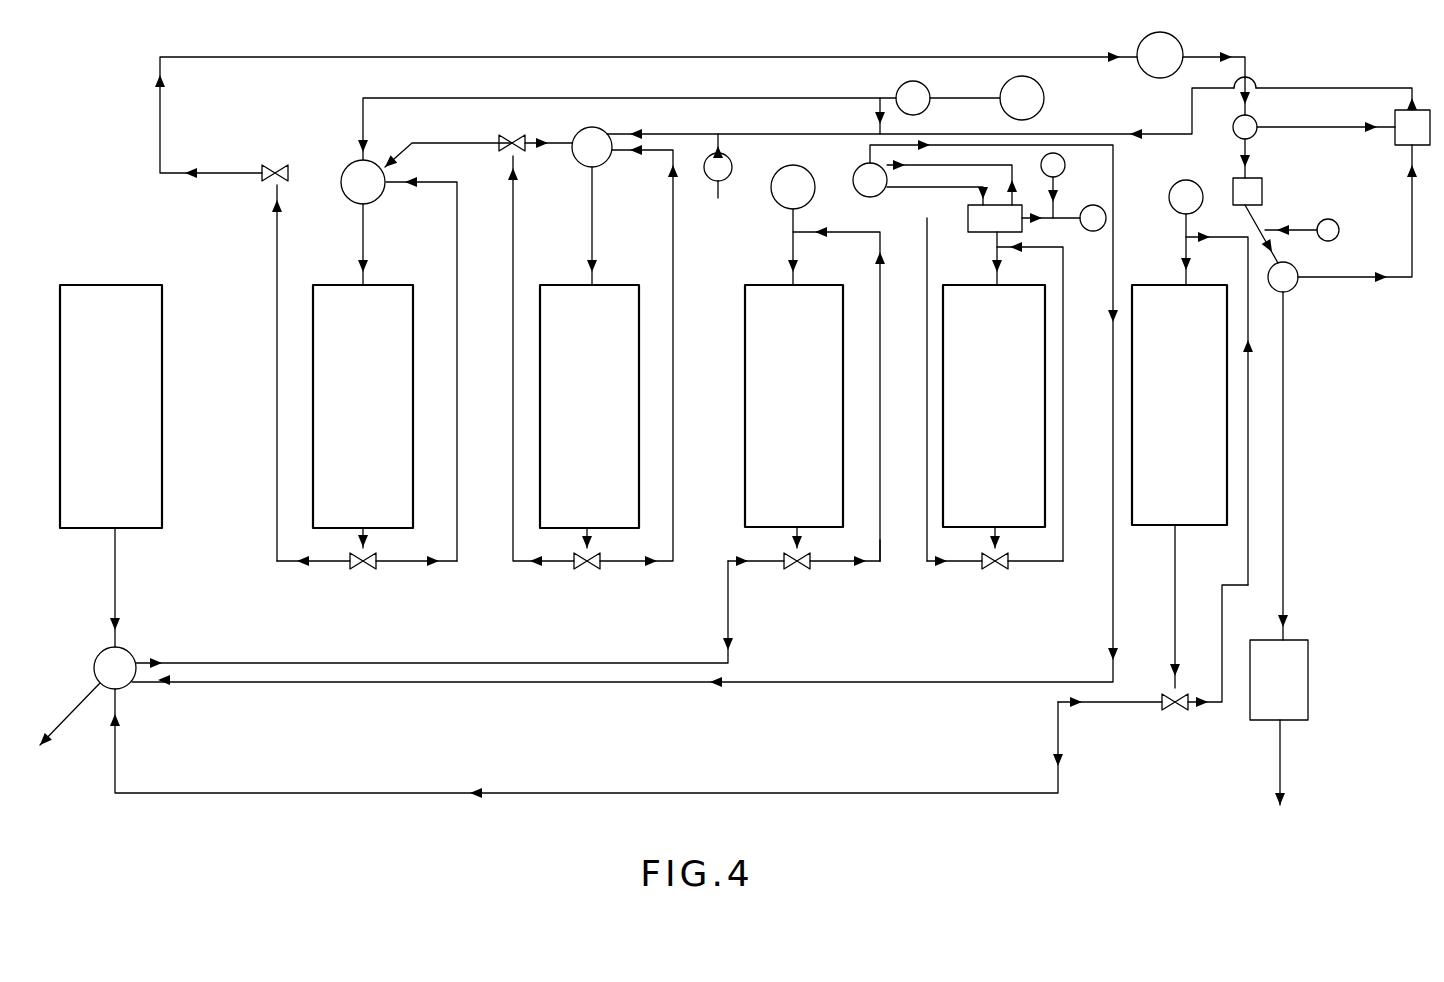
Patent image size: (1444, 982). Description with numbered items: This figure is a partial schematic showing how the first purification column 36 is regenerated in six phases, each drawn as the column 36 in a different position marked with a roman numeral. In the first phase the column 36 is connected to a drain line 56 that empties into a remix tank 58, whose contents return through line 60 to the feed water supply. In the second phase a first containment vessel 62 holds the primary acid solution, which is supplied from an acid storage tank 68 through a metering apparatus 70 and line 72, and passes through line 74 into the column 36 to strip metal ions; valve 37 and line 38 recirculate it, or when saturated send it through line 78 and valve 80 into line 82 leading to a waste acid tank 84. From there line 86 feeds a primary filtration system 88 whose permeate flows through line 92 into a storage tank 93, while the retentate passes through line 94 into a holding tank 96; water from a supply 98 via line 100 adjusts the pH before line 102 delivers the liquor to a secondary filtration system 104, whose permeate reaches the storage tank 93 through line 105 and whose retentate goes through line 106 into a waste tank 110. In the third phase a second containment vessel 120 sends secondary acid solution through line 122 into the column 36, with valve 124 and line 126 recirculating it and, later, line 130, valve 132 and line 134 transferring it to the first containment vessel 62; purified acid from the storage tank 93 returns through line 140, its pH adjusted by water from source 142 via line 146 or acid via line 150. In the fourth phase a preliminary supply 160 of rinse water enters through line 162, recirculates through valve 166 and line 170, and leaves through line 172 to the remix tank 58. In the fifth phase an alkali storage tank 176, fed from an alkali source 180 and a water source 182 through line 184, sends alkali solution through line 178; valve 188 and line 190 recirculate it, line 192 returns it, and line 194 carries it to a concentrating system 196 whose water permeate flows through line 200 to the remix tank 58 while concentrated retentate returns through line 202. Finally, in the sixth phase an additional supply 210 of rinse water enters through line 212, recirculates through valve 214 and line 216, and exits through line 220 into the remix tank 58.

The first column 36 is at (143, 328).
The valve 37 is at (365, 574).
The line 38 is at (457, 548).
The drain line 56 is at (120, 560).
The remix tank 58 is at (130, 652).
The line 60 is at (78, 706).
The first containment vessel 62 is at (349, 170).
The acid storage tank 68 is at (1044, 98).
The metering apparatus 70 is at (925, 93).
The line 72 is at (760, 98).
The line 74 is at (370, 233).
The line 78 is at (275, 232).
The valve 80 is at (276, 165).
The line 82 is at (808, 57).
The waste acid tank 84 is at (1173, 46).
The line 86 is at (1251, 92).
The primary filtration system 88 is at (1255, 137).
The line 92 is at (1326, 127).
The storage tank 93 is at (1395, 141).
The line 94 is at (1243, 148).
The holding tank 96 is at (1262, 191).
The supply of water 98 is at (1340, 229).
The line 100 is at (1300, 228).
The line 102 is at (1272, 240).
The secondary filtration system 104 is at (1295, 289).
The line 105 is at (1380, 284).
The line 106 is at (1290, 431).
The waste tank 110 is at (1306, 666).
The second containment vessel 120 is at (606, 158).
The line 122 is at (597, 231).
The valve 124 is at (589, 574).
The line 126 is at (673, 561).
The line 130 is at (518, 232).
The valve 132 is at (512, 137).
The line 134 is at (436, 138).
The line 140 is at (1135, 131).
The source of water 142 is at (723, 204).
The line 146 is at (733, 156).
The line 150 is at (878, 100).
The preliminary supply of rinse water 160 is at (808, 173).
The line 162 is at (790, 249).
The valve 166 is at (799, 574).
The line 170 is at (880, 538).
The line 172 is at (735, 640).
The alkali storage tank 176 is at (972, 232).
The line 178 is at (985, 259).
The source of dry alkali material 180 is at (1093, 231).
The source of water 182 is at (1065, 165).
The line 184 is at (1059, 212).
The valve 188 is at (997, 574).
The line 190 is at (1063, 561).
The line 192 is at (927, 561).
The line 194 is at (950, 165).
The concentrating system 196 is at (860, 193).
The line 200 is at (880, 683).
The line 202 is at (918, 192).
The additional supply of rinse water 210 is at (1178, 188).
The line 212 is at (1184, 243).
The valve 214 is at (1178, 718).
The line 216 is at (1246, 580).
The line 220 is at (918, 793).